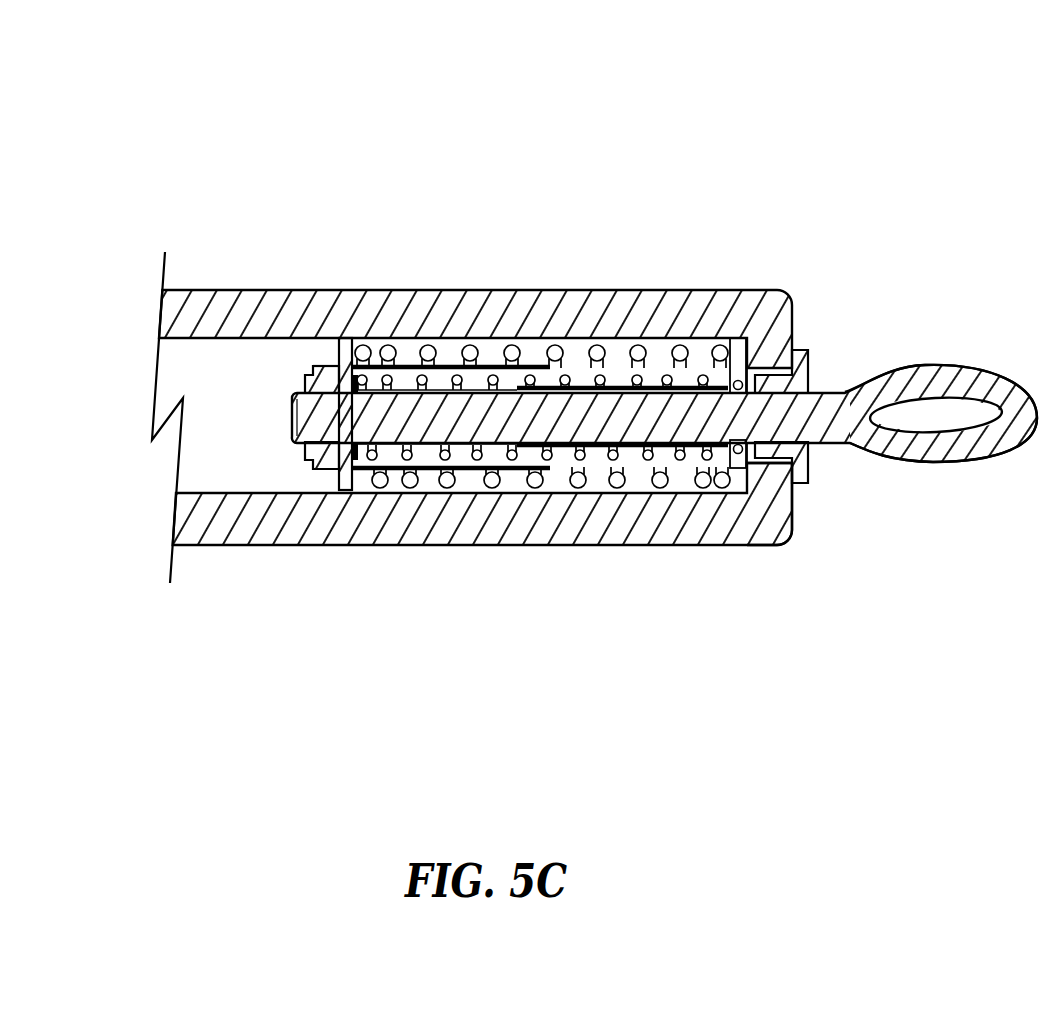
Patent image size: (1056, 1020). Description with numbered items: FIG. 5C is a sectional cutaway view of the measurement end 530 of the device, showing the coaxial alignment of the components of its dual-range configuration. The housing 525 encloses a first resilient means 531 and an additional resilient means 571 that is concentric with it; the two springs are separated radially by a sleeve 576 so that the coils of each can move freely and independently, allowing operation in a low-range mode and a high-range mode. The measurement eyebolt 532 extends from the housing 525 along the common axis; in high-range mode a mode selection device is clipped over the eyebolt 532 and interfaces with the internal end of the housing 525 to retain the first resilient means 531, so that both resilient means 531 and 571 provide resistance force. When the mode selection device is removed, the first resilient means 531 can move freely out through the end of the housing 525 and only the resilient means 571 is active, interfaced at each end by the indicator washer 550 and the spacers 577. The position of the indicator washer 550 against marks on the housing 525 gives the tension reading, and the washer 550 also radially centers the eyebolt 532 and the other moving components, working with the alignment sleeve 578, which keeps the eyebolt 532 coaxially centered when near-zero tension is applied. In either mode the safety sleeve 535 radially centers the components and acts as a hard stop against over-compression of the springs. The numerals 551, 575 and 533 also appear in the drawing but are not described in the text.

The measurement end 530 is at (740, 148).
The housing 525 is at (257, 548).
The shoulder 551 is at (323, 366).
The indicator washer 550 is at (350, 338).
The safety sleeve 535 is at (607, 352).
The first resilient means 531 is at (666, 343).
The sleeve 576 is at (742, 338).
The collar 575 is at (433, 475).
The additional resilient means 571 is at (537, 494).
The spacers 577 is at (770, 461).
The alignment sleeve 578 is at (787, 505).
The measurement eyebolt 532 is at (822, 448).
The pull ring 533 is at (967, 464).